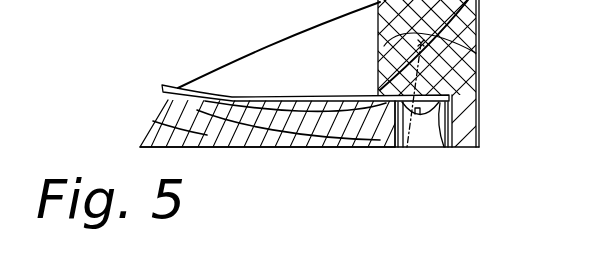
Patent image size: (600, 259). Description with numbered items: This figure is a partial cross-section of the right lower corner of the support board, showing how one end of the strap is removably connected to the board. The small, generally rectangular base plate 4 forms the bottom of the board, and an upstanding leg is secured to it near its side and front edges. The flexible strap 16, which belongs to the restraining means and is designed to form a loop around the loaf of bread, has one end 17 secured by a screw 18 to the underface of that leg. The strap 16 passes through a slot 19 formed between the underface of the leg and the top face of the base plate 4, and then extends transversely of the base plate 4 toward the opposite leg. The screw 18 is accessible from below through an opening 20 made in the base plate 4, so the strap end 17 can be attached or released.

The base plate 4 is at (298, 124).
The flexible strap 16 is at (247, 97).
The end of the strap 17 is at (449, 128).
The screw 18 is at (434, 72).
The slot 19 is at (386, 101).
The opening 20 is at (417, 138).